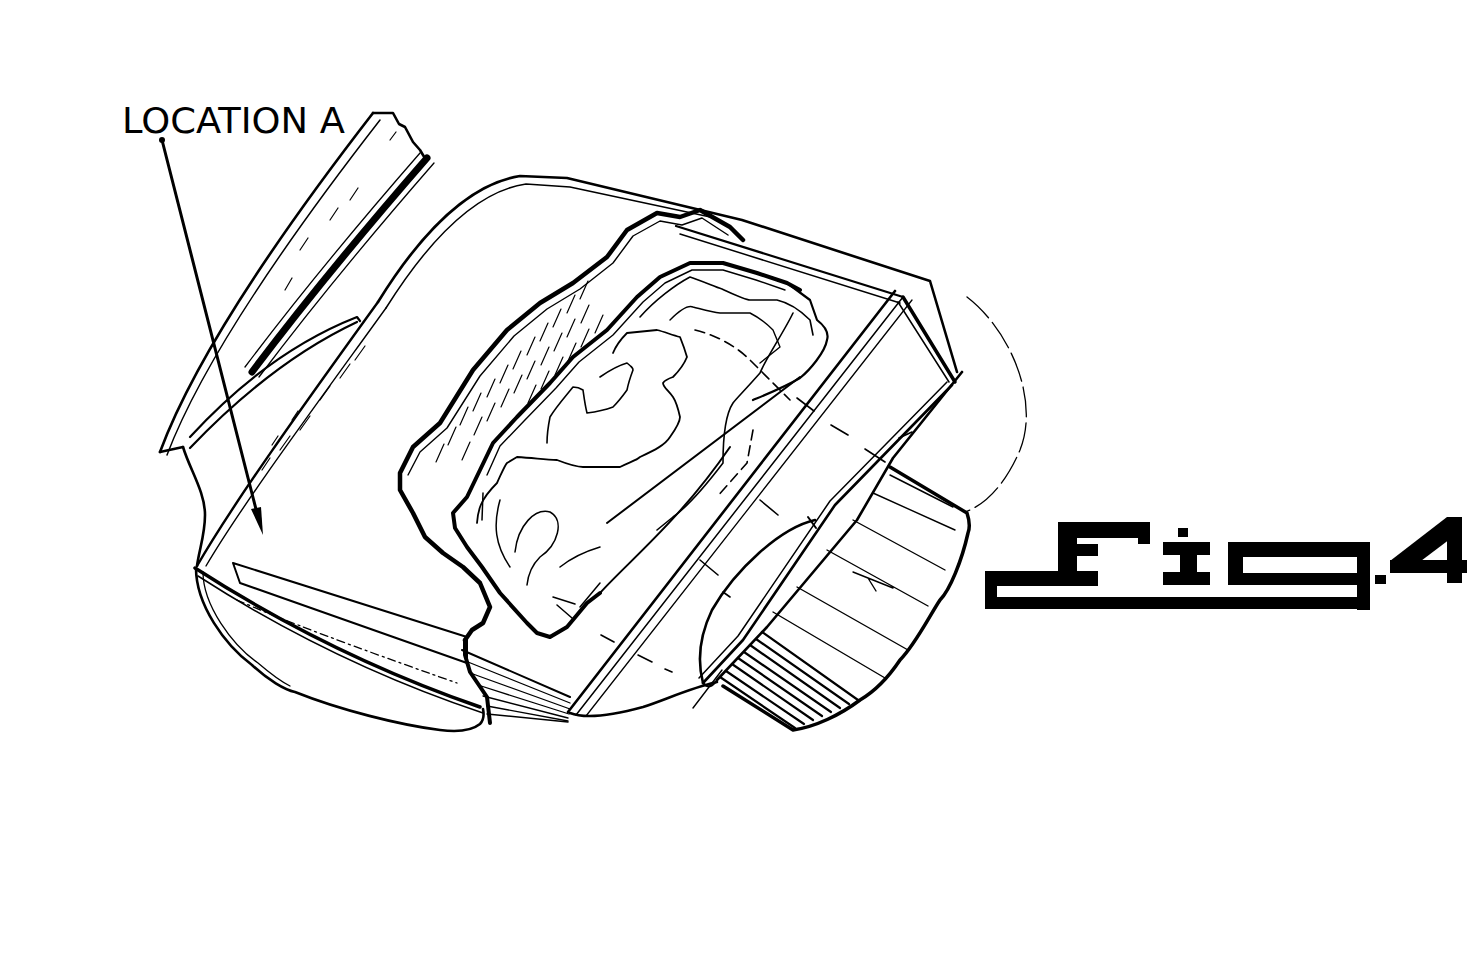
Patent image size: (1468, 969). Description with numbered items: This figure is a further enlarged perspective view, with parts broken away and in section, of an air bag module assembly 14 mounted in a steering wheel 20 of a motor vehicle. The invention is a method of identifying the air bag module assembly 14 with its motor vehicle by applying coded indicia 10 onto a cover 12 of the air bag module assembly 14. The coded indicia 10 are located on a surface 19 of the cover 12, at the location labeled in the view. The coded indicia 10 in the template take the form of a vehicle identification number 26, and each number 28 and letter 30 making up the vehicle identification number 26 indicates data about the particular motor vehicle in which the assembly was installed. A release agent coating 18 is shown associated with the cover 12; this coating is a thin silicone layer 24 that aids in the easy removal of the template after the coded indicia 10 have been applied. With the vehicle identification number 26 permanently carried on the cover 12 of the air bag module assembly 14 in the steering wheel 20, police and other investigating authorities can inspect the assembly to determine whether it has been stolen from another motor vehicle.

The coded indicia 10 is at (313, 542).
The cover 12 is at (582, 207).
The air bag module assembly 14 is at (936, 318).
The release agent coating 18 is at (253, 597).
The surface 19 is at (521, 213).
The steering wheel 20 is at (308, 213).
The thin silicone layer 24 is at (353, 568).
The vehicle identification number 26 is at (283, 540).
The number 28 is at (262, 555).
The letter 30 is at (396, 601).